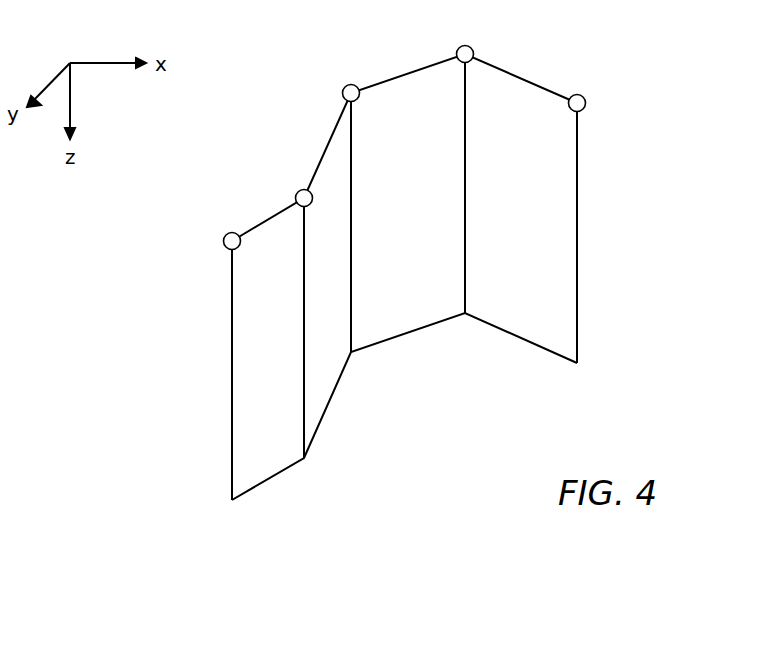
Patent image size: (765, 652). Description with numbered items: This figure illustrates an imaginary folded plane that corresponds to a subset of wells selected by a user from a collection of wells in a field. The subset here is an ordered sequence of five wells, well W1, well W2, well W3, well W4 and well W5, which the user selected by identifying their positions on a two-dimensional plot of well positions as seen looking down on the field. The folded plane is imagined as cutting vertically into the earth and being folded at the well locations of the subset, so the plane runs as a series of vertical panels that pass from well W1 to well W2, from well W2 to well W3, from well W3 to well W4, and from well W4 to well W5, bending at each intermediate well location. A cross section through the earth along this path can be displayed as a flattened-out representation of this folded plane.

The well W1 is at (211, 235).
The well W2 is at (282, 190).
The well W3 is at (331, 82).
The well W4 is at (450, 43).
The well W5 is at (580, 89).